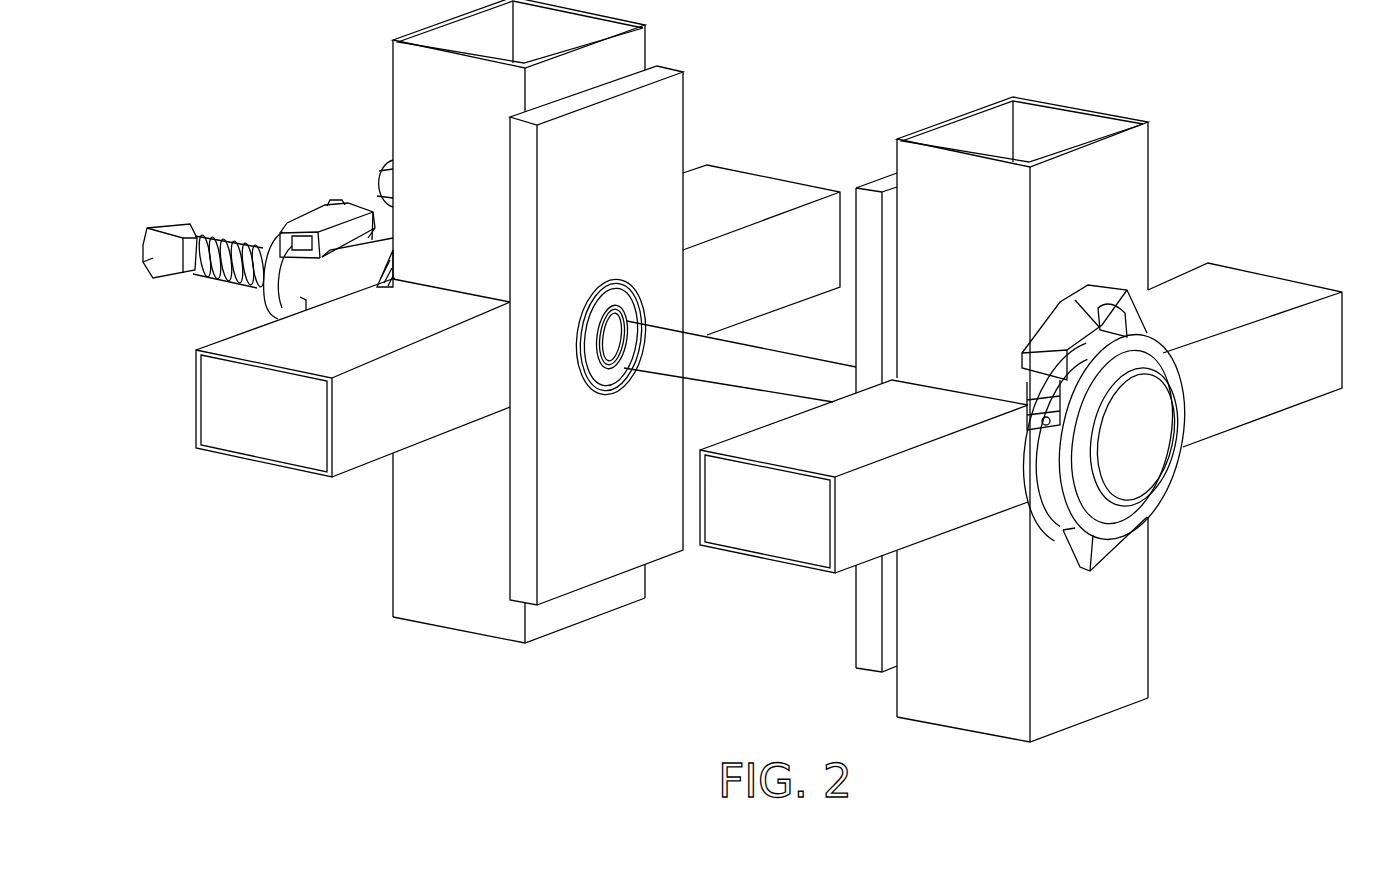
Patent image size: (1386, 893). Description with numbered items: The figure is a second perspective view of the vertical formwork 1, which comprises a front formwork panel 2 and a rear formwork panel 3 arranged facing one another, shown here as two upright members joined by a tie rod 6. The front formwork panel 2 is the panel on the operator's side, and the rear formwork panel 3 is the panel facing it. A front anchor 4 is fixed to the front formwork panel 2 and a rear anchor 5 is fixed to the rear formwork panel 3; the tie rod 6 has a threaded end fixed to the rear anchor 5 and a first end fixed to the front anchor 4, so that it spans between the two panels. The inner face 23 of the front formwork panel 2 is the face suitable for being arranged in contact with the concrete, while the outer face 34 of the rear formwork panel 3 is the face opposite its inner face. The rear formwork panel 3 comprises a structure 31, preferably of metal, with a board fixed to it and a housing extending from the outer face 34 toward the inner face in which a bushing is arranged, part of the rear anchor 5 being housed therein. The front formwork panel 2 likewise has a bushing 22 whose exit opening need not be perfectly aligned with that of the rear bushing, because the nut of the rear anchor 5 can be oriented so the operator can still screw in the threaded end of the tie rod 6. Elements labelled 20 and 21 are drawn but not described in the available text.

The vertical formwork 1 is at (832, 101).
The front formwork panel 2 is at (392, 145).
The rear formwork panel 3 is at (1152, 190).
The front anchor 4 is at (307, 217).
The rear anchor 5 is at (1168, 503).
The tie rod 6 is at (172, 242).
The connection plate 20 is at (668, 178).
The first column profile 21 is at (445, 595).
The bushing 22 is at (617, 397).
The inner face 23 is at (623, 203).
The structure 31 is at (1118, 670).
The outer face 34 is at (1108, 241).